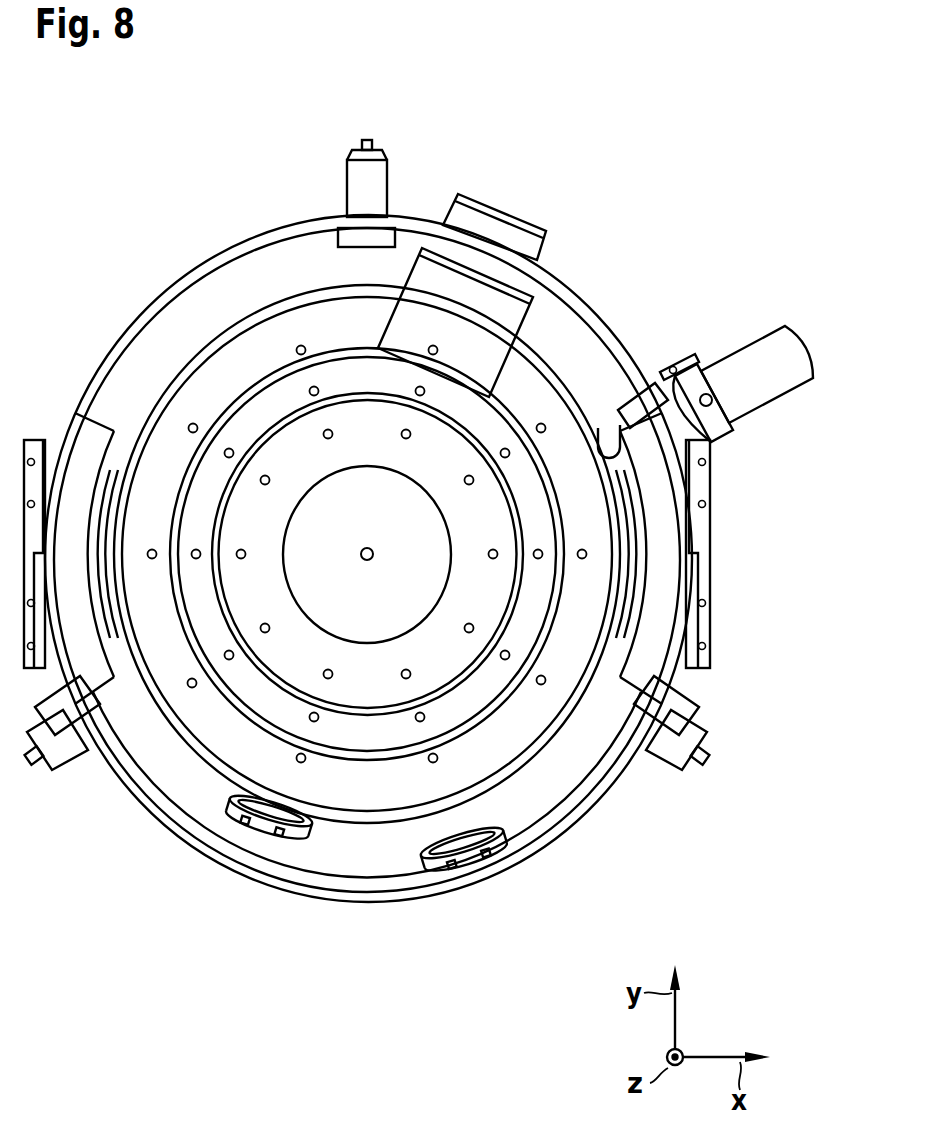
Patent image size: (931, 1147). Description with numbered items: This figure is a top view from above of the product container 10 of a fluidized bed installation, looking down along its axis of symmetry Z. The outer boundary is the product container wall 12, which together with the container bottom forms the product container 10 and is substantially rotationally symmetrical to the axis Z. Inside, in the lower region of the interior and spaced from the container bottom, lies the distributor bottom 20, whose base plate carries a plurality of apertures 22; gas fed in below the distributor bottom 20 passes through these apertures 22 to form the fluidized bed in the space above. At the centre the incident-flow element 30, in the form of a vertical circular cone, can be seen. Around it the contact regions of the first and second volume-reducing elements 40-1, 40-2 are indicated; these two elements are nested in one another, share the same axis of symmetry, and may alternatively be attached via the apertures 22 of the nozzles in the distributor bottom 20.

The product container 10 is at (240, 132).
The product container wall 12 is at (188, 271).
The distributor bottom 20 is at (535, 728).
The apertures 22 is at (191, 686).
The incident-flow element 30 is at (384, 517).
The first volume-reducing element 40-1 is at (620, 428).
The second volume-reducing element 40-2 is at (497, 400).